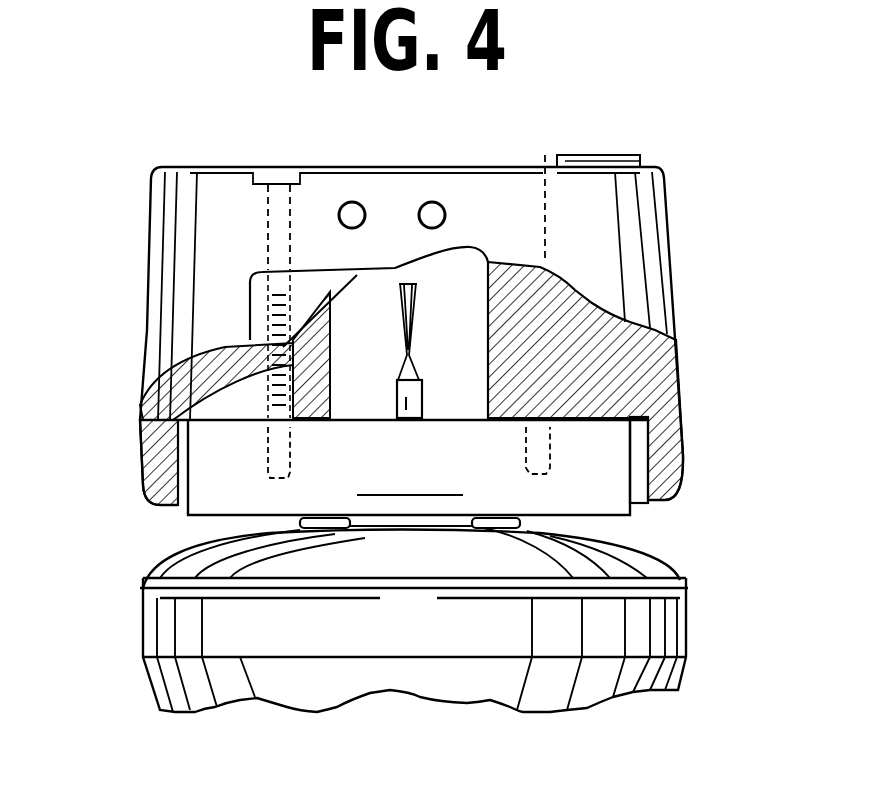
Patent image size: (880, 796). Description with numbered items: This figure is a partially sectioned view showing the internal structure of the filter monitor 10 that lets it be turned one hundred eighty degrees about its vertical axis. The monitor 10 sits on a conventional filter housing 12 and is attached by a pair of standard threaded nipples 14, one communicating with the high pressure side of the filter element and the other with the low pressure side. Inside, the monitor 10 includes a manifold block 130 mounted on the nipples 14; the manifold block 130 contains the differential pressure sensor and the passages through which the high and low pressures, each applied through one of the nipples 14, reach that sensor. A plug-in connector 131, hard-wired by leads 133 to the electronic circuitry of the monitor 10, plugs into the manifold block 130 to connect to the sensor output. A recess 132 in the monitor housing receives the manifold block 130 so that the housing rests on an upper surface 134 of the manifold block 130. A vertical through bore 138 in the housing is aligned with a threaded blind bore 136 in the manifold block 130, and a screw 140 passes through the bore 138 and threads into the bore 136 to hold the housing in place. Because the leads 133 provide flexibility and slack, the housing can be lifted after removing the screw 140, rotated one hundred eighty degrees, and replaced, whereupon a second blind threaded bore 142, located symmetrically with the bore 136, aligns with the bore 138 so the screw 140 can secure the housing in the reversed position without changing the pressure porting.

The filter monitor 10 is at (607, 211).
The filter housing 12 is at (642, 630).
The threaded nipples 14 is at (300, 524).
The manifold block 130 is at (605, 447).
The plug-in connector 131 is at (402, 407).
The recess 132 is at (630, 481).
The leads 133 is at (418, 300).
The upper surface 134 is at (662, 357).
The threaded blind bore 136 is at (260, 460).
The vertical through bore 138 is at (202, 385).
The screw 140 is at (245, 360).
The second blind threaded bore 142 is at (545, 150).